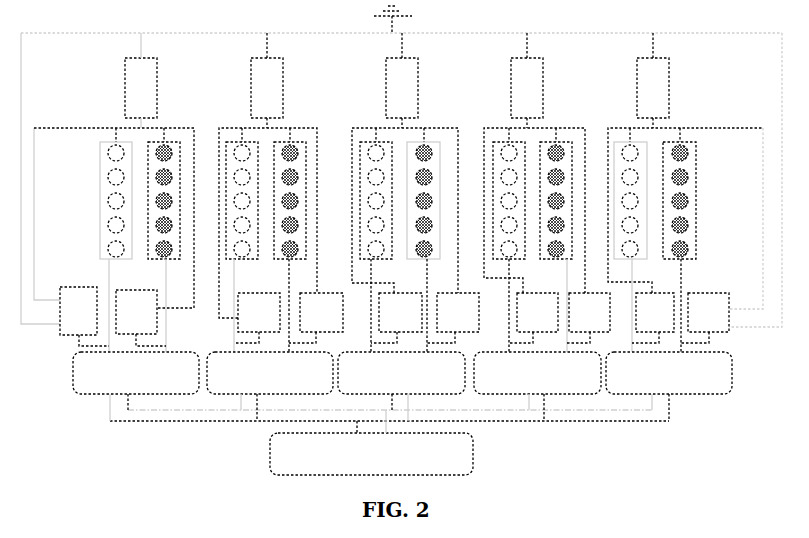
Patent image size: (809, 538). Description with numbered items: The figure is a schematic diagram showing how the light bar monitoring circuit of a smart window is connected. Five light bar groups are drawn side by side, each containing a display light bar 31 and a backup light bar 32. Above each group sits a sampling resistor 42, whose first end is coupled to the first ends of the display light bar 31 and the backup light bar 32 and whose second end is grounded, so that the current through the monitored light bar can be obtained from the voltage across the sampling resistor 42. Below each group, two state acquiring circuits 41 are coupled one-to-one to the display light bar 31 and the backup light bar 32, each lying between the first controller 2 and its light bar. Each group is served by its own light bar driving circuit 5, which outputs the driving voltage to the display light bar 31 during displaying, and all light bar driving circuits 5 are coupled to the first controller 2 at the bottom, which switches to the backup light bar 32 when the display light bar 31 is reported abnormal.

The first controller 2 is at (371, 442).
The light bar driving circuit 5 is at (402, 386).
The display light bar 31 is at (100, 156).
The backup light bar 32 is at (181, 156).
The state acquiring circuit 41 is at (394, 316).
The sampling resistor 42 is at (397, 80).